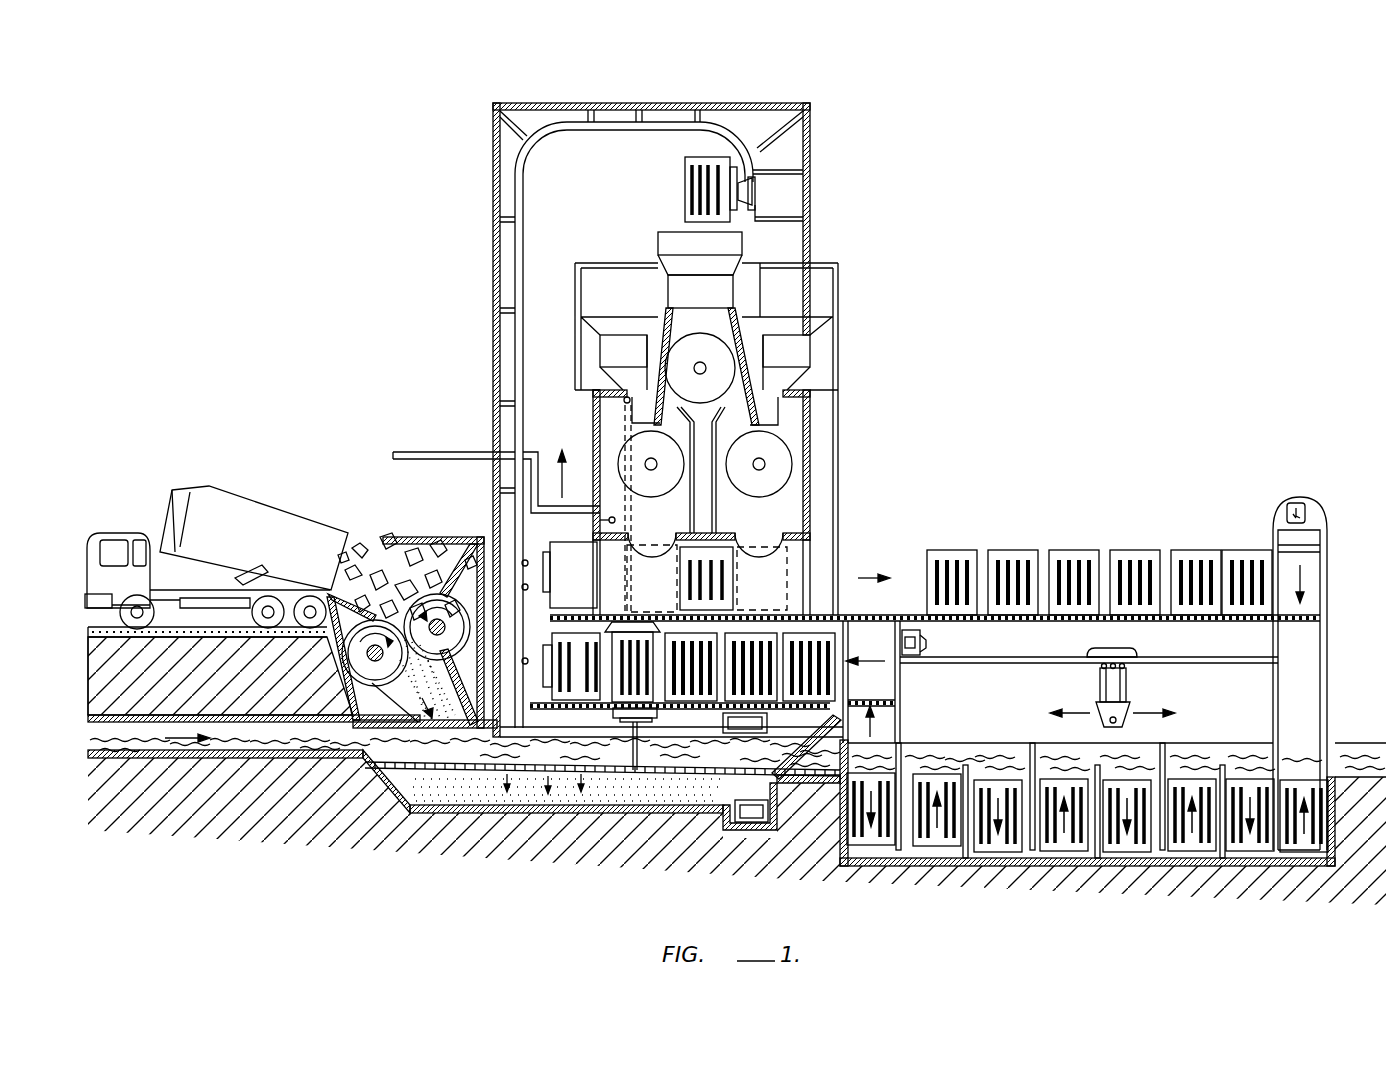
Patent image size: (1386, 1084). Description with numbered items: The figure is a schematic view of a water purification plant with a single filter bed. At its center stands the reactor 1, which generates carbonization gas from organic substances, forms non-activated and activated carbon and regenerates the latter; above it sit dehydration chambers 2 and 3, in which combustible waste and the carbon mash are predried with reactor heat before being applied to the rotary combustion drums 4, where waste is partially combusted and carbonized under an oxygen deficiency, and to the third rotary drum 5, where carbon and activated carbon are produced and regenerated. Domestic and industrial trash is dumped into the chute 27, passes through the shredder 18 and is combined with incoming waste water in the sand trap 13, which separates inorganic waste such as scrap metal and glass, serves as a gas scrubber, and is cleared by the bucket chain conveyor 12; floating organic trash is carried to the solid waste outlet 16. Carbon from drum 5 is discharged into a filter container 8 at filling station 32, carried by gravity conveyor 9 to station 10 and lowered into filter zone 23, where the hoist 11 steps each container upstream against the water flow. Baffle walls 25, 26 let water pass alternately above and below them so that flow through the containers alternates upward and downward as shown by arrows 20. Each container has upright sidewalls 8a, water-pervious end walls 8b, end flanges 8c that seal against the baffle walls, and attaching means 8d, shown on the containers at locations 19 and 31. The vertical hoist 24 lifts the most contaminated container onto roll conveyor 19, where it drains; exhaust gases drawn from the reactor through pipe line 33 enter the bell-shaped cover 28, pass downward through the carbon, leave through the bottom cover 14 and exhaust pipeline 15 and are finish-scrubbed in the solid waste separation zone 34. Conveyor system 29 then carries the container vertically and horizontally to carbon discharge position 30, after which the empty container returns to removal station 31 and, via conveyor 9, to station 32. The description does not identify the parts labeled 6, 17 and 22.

The reactor 1 is at (806, 423).
The dehydration chamber 2 is at (762, 243).
The dehydration chamber 3 is at (738, 290).
The rotary combustion drums 4 is at (628, 457).
The third rotary drum 5 is at (683, 356).
The feed pipe 6 is at (452, 455).
The filter container 8 is at (718, 578).
The upright sidewalls 8a is at (1100, 800).
The water pervious end walls 8b is at (1060, 780).
The end flanges 8c is at (965, 767).
The attaching means 8d is at (528, 563).
The gravity conveyor 9 is at (855, 618).
The station 10 is at (1310, 600).
The hoist 11 is at (1140, 653).
The bucket chain conveyor 12 is at (750, 822).
The sand trap 13 is at (445, 828).
The bottom cover 14 is at (660, 716).
The exhaust pipeline 15 is at (627, 803).
The solid waste outlet 16 is at (843, 740).
The water channel 17 is at (108, 730).
The shredder 18 is at (362, 668).
The roll conveyor 19 is at (428, 735).
The arrows 20 is at (880, 782).
The air duct 22 is at (756, 152).
The filter zone 23 is at (1292, 866).
The vertical hoist 24 is at (905, 630).
The baffle wall 25 is at (1120, 862).
The baffle wall 26 is at (1031, 850).
The chute 27 is at (368, 538).
The bell-shaped filter container cover 28 is at (627, 622).
The conveyor system 29 is at (498, 605).
The carbon discharge position 30 is at (750, 197).
The removal station 31 is at (477, 540).
The filling station 32 is at (707, 555).
The pipe line 33 is at (620, 416).
The solid waste separation zone 34 is at (523, 783).